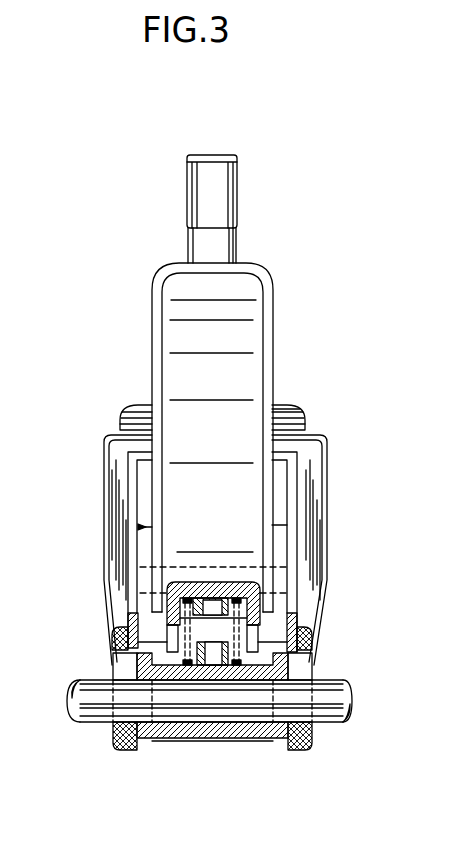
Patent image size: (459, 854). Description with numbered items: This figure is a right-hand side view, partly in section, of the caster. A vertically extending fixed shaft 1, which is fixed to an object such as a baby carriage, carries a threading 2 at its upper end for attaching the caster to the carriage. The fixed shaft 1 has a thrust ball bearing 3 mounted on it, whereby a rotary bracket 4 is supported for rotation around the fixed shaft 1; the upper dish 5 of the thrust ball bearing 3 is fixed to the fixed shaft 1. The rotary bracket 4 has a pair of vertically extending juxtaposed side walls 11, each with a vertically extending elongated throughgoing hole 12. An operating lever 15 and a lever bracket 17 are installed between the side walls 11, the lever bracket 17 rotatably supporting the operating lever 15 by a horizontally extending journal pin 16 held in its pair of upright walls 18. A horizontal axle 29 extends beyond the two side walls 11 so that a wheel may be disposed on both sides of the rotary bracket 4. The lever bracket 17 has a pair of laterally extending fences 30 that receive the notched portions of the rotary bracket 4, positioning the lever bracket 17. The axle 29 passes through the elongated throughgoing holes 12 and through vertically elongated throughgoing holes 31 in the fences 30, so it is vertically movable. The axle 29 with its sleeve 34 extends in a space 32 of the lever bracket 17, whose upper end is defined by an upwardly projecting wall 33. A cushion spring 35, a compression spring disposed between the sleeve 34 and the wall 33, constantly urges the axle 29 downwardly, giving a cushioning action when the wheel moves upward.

The fixed shaft 1 is at (247, 248).
The threading 2 is at (237, 196).
The thrust ball bearing 3 is at (294, 401).
The rotary bracket 4 is at (338, 526).
The upper dish 5 is at (297, 410).
The side walls 11 is at (140, 612).
The elongated throughgoing hole 12 is at (133, 660).
The operating lever 15 is at (274, 291).
The journal pin 16 is at (148, 569).
The lever bracket 17 is at (138, 527).
The upright walls 18 is at (143, 537).
The axle 29 is at (335, 716).
The fences 30 is at (113, 735).
The elongated throughgoing holes 31 is at (112, 668).
The space 32 is at (312, 635).
The wall 33 is at (168, 586).
The sleeve 34 is at (170, 738).
The cushion spring 35 is at (203, 683).